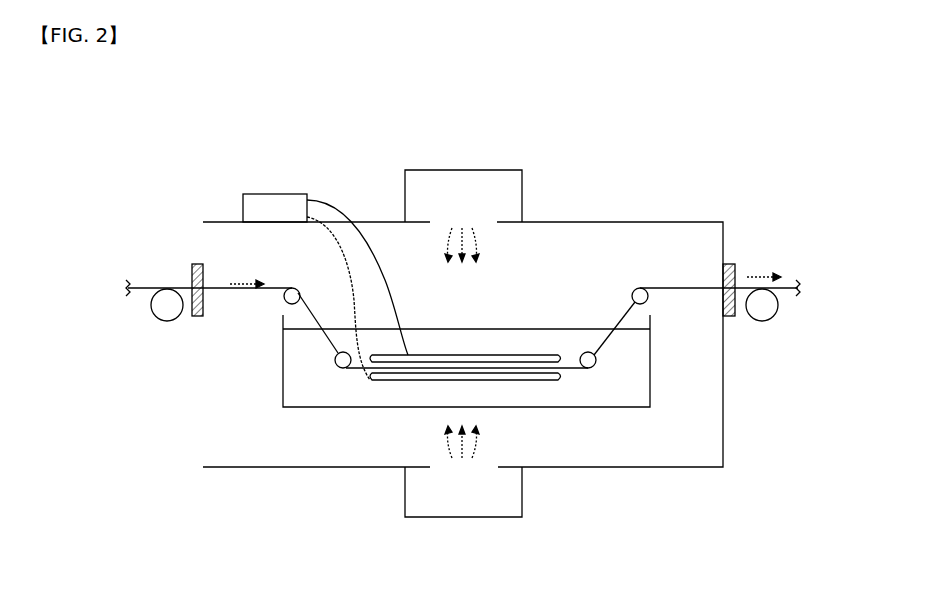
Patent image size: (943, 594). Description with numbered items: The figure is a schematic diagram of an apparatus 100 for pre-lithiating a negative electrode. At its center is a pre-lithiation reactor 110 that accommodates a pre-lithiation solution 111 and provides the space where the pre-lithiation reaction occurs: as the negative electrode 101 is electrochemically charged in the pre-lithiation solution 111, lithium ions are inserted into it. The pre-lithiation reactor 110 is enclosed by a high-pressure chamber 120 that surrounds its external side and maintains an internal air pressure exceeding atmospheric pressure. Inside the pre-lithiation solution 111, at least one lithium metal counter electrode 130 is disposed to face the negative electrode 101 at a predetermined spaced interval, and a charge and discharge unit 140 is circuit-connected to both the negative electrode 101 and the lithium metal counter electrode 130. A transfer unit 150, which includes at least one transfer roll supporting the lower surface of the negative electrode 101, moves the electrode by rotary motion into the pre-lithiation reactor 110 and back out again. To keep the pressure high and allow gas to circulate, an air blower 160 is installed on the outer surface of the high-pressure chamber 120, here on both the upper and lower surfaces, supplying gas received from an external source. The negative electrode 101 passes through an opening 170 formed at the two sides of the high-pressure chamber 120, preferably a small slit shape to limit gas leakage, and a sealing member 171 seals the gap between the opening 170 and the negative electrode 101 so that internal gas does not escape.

The pre-lithiation apparatus 100 is at (113, 118).
The negative electrode 101 is at (575, 395).
The pre-lithiation reactor 110 is at (350, 408).
The pre-lithiation solution 111 is at (645, 400).
The high-pressure chamber 120 is at (663, 468).
The lithium metal counter electrode 130 is at (530, 350).
The charge and discharge unit 140 is at (280, 194).
The transfer unit 150 is at (768, 320).
The air blower 160 is at (490, 170).
The opening 170 is at (205, 292).
The sealing member 171 is at (192, 262).